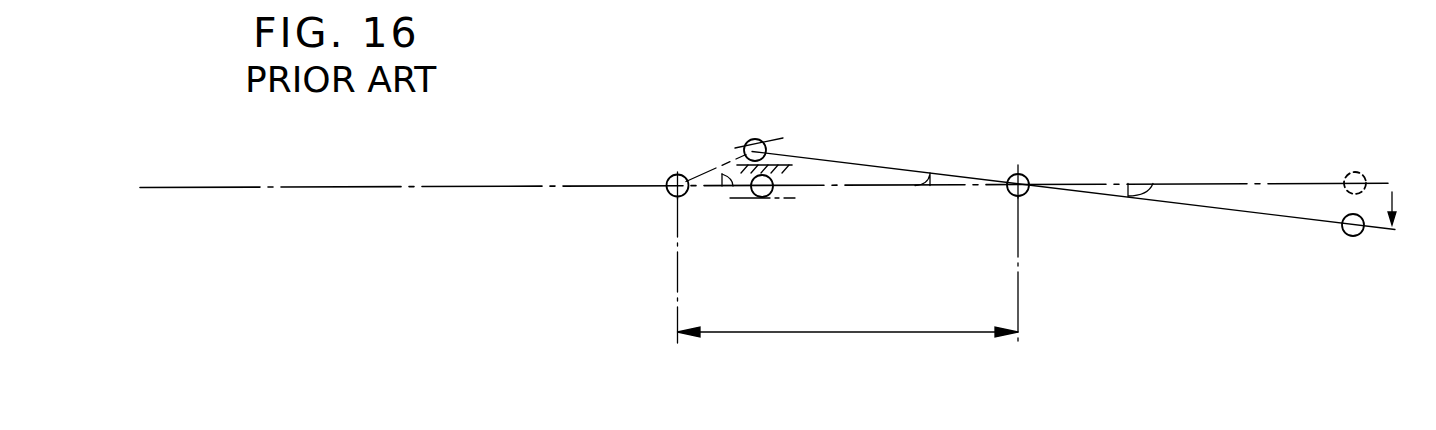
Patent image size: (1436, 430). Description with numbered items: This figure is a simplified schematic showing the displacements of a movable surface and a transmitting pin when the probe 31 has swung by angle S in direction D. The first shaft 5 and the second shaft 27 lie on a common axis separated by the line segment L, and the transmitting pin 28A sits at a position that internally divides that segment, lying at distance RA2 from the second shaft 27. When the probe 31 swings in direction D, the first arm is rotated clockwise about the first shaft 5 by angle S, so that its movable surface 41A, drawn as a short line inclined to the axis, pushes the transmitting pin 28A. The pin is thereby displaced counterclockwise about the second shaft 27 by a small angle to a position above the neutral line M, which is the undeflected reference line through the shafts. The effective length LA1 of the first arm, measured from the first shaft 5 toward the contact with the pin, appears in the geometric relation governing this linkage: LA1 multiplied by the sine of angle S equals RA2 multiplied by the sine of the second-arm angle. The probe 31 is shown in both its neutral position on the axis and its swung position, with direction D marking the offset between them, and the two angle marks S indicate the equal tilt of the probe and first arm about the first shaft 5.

The second shaft 27 is at (670, 176).
The distance from the second shaft to the transmitting pin RA2 is at (720, 173).
The transmitting pin 28A is at (765, 143).
The movable surface 41A is at (785, 150).
The effective length of the first arm LA1 is at (905, 170).
The first shaft 5 is at (1020, 175).
The swing angle S is at (917, 188).
The probe 31 is at (1347, 172).
The neutral line M is at (1384, 178).
The swing direction D is at (1406, 209).
The line segment between the first and second shafts L is at (848, 270).